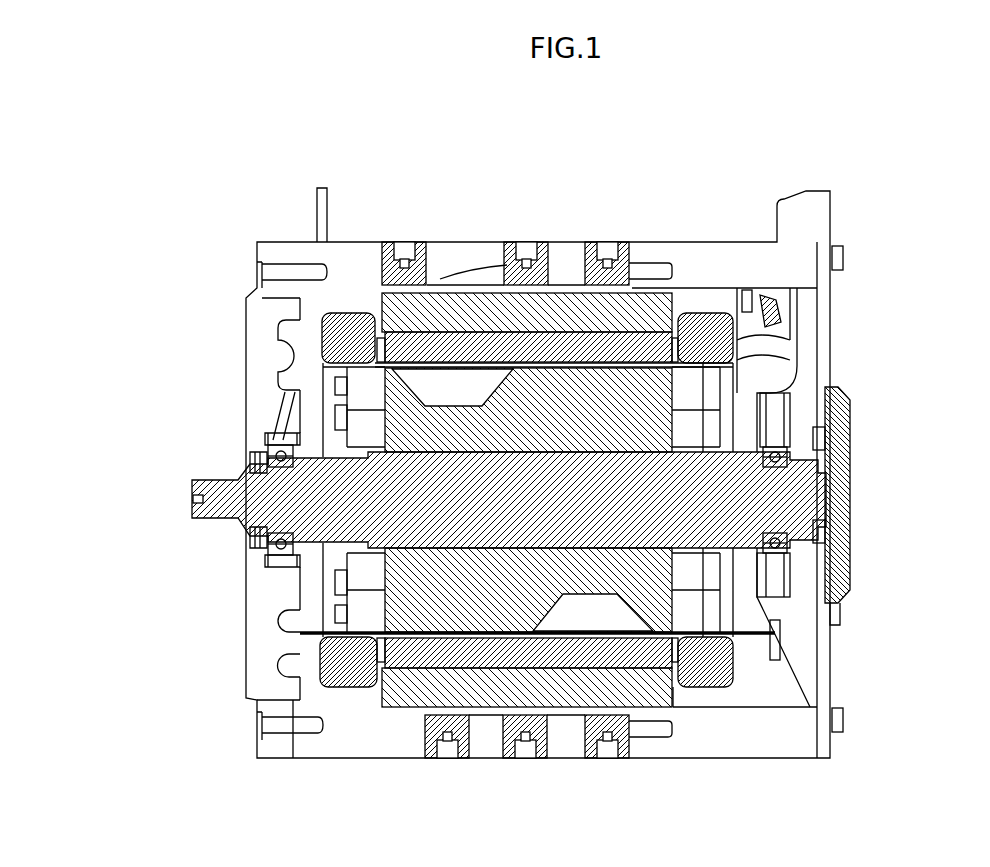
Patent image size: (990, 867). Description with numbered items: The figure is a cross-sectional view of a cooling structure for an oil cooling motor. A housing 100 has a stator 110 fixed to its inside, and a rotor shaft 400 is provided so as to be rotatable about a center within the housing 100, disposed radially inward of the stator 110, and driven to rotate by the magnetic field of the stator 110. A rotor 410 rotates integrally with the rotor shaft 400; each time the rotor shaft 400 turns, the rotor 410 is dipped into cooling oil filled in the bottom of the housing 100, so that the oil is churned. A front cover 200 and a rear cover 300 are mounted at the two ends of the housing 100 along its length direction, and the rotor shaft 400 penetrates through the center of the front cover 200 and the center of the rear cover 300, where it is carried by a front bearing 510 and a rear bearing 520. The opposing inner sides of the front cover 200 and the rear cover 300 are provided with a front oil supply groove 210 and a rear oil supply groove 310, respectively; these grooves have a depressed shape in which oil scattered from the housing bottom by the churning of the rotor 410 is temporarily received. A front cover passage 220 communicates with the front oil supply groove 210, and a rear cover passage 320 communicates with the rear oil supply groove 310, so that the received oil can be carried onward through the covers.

The housing 100 is at (677, 238).
The stator 110 is at (574, 300).
The front cover 200 is at (263, 403).
The front oil supply groove 210 is at (287, 357).
The front cover passage 220 is at (285, 415).
The rear cover 300 is at (812, 372).
The rear oil supply groove 310 is at (740, 372).
The rear cover passage 320 is at (762, 408).
The rotor shaft 400 is at (815, 487).
The rotor 410 is at (688, 380).
The front bearing 510 is at (267, 558).
The rear bearing 520 is at (790, 557).